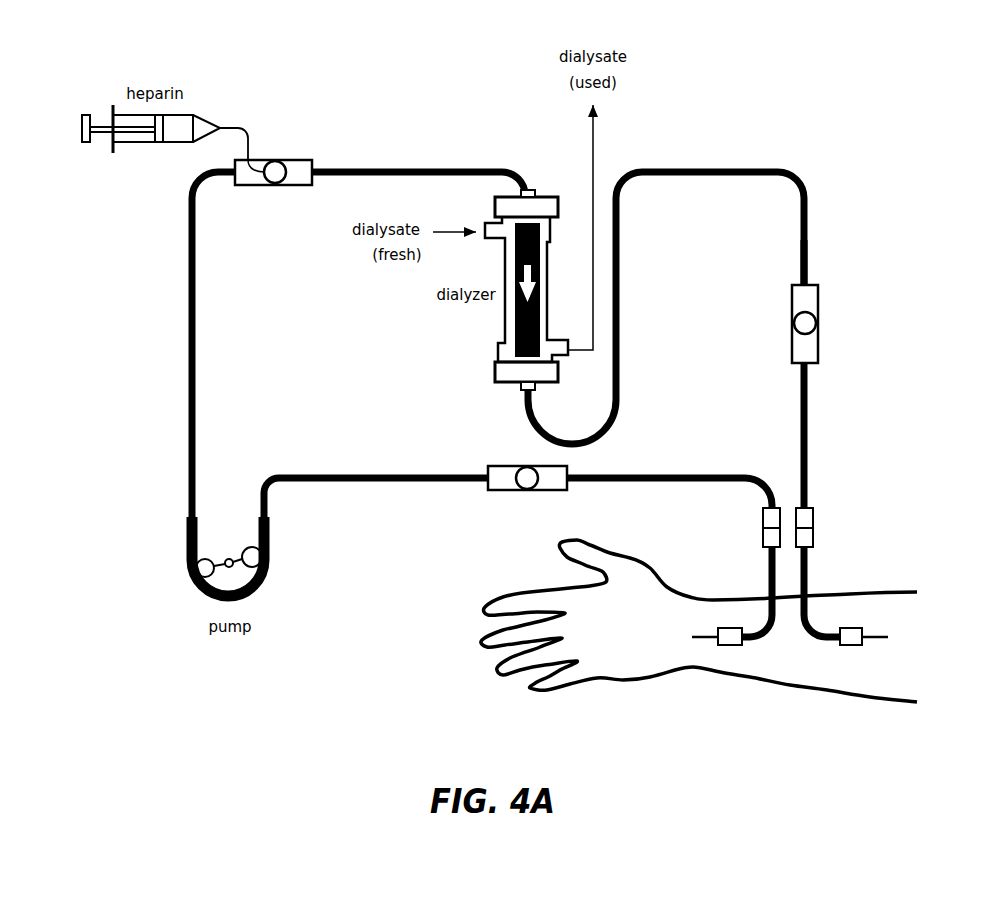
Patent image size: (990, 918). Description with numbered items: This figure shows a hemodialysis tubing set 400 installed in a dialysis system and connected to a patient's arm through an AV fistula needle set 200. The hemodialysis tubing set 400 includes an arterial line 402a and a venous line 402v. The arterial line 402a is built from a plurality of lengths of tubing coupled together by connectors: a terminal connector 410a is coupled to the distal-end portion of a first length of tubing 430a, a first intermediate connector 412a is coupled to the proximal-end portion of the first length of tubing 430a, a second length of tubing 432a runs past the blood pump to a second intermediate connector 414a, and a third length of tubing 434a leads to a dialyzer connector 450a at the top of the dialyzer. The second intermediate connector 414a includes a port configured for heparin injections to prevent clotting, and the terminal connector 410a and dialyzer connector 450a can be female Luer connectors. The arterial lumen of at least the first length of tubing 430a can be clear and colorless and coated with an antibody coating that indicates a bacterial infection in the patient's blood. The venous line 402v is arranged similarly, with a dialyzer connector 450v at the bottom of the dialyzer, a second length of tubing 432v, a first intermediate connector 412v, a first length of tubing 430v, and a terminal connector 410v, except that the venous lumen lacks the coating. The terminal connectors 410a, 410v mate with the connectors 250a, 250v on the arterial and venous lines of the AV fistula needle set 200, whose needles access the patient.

The hemodialysis tubing set 400 is at (900, 133).
The arterial line 402a is at (170, 218).
The venous line 402v is at (827, 222).
The second intermediate connector 414a is at (252, 185).
The third length of tubing 434a is at (363, 168).
The dialyzer connector 450a is at (532, 190).
The dialyzer connector 450v is at (518, 393).
The second length of tubing 432v is at (715, 168).
The first intermediate connector 412v is at (818, 297).
The first length of tubing 430v is at (807, 405).
The second length of tubing 432a is at (332, 473).
The first intermediate connector 412a is at (498, 490).
The first length of tubing 430a is at (660, 477).
The terminal connector 410a is at (763, 513).
The terminal connector 410v is at (813, 515).
The connector 250a is at (763, 537).
The connector 250v is at (813, 537).
The AV fistula needle set 200 is at (812, 645).